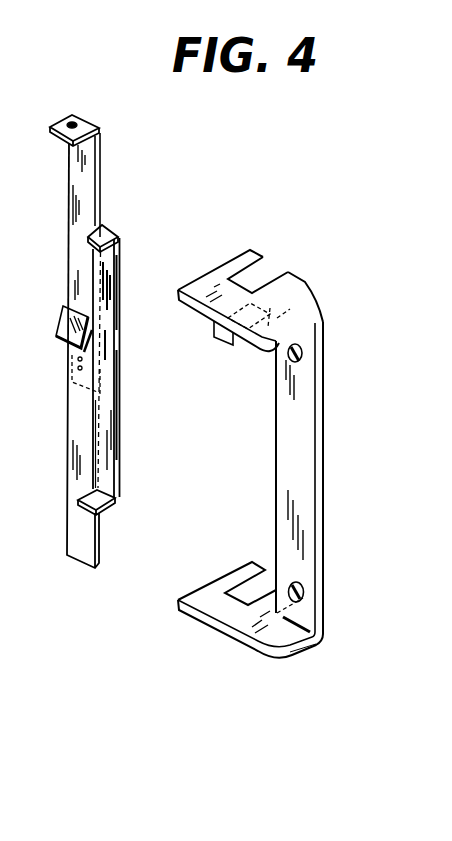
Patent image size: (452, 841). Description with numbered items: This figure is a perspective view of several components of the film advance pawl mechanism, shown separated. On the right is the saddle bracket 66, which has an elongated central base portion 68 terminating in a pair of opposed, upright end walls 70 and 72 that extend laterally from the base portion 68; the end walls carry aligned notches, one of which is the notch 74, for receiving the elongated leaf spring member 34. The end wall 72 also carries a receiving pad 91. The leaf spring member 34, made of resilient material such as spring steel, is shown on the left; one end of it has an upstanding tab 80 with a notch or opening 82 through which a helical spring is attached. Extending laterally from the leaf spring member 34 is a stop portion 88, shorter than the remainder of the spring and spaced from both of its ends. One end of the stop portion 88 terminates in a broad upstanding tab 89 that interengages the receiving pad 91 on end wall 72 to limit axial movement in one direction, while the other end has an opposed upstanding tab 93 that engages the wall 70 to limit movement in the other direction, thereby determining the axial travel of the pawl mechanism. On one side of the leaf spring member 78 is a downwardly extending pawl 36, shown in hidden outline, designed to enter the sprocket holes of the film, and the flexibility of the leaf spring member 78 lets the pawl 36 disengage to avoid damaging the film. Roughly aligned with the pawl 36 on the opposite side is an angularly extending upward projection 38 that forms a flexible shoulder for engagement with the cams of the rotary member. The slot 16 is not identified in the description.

The upstanding tab 80 is at (79, 109).
The notch or opening 82 is at (77, 125).
The elongated leaf spring member 34 is at (70, 227).
The leaf spring member 78 is at (78, 433).
The upstanding tab 89 is at (110, 228).
The stop portion 88 is at (119, 256).
The upstanding tab 93 is at (110, 506).
The angularly extending upward projection 38 is at (64, 317).
The pawl 36 is at (101, 366).
The saddle bracket 66 is at (267, 461).
The end wall 72 is at (268, 308).
The slot 16 is at (265, 278).
The receiving pad 91 is at (222, 342).
The elongated central base portion 68 is at (288, 470).
The notch 74 is at (203, 626).
The end wall 70 is at (292, 643).